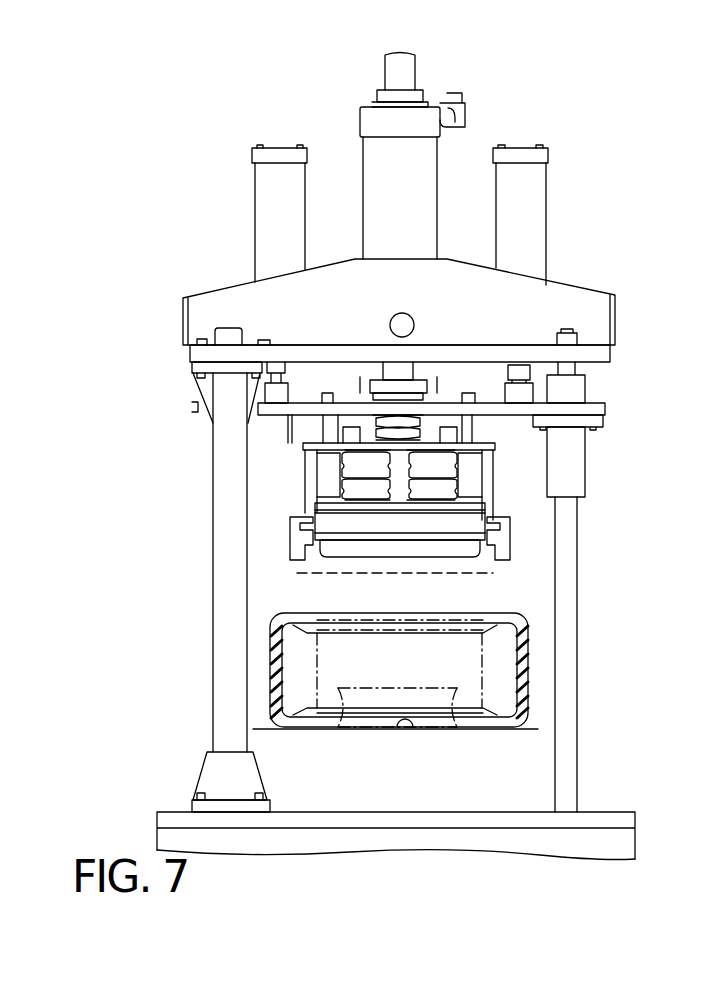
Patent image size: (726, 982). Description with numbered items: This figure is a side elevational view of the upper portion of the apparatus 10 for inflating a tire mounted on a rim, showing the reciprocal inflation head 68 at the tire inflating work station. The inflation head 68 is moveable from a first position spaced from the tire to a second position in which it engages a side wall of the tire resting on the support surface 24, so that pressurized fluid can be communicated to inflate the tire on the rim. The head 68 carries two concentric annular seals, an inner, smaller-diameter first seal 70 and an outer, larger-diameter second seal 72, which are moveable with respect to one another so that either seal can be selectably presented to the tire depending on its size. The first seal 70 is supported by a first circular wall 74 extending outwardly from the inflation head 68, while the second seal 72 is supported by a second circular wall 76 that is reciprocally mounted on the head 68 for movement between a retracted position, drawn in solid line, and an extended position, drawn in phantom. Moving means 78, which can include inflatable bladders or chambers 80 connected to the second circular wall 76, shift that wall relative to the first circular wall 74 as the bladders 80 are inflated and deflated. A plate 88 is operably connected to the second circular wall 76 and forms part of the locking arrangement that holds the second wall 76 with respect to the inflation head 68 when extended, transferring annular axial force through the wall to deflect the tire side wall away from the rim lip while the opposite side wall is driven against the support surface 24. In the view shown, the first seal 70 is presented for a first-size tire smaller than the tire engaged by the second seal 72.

The apparatus 10 is at (622, 182).
The support surface 24 is at (413, 733).
The reciprocal inflation head 68 is at (483, 372).
The first seal 70 is at (404, 561).
The second seal 72 is at (489, 553).
The first circular wall 74 is at (372, 557).
The second circular wall 76 is at (303, 557).
The moving means 78 is at (382, 424).
The inflatable bladders 80 is at (426, 431).
The plate 88 is at (318, 437).